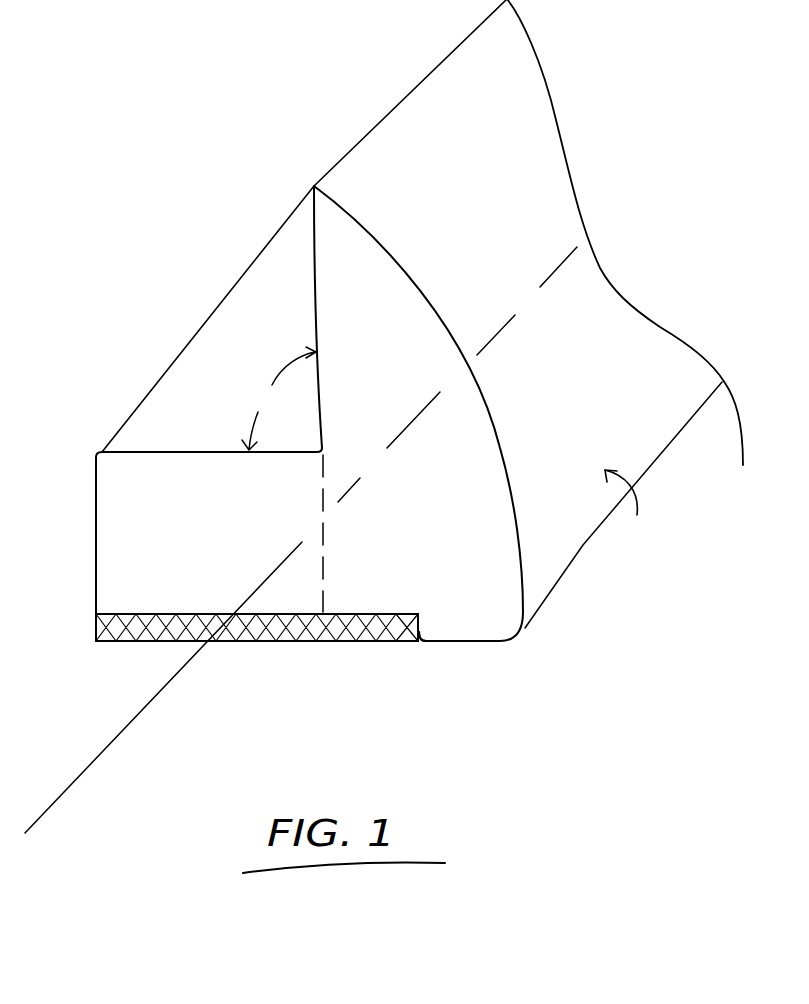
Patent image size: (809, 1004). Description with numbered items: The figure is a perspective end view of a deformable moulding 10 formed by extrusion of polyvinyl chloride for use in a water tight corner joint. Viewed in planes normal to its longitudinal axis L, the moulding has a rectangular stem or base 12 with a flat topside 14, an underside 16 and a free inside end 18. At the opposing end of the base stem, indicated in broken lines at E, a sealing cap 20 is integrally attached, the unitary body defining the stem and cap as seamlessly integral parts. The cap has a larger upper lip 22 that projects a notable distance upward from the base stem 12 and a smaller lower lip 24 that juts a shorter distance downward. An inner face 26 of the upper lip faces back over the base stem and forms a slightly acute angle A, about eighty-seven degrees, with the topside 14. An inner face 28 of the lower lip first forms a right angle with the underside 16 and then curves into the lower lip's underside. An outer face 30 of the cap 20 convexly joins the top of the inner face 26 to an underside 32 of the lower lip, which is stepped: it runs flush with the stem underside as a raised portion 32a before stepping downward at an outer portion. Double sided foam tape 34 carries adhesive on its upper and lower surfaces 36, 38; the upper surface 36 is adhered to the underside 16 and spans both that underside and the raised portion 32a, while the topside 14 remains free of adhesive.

The moulding 10 is at (208, 116).
The rectangular stem or base 12 is at (140, 541).
The topside 14 is at (178, 415).
The underside 16 is at (140, 641).
The free inside end 18 is at (95, 503).
The sealing cap 20 is at (637, 511).
The upper lip 22 is at (397, 161).
The lower lip 24 is at (567, 543).
The inner face of the upper lip 26 is at (288, 252).
The inner face of the lower lip 28 is at (415, 633).
The outer face of the cap 30 is at (587, 352).
The underside of the lower lip 32 is at (436, 657).
The raised portion of the lower lip's underside 32a is at (400, 620).
The double sided foam tape 34 is at (273, 632).
The upper surface of the tape 36 is at (172, 614).
The lower surface of the tape 38 is at (107, 645).
The angle A is at (279, 398).
The opposing end of the base stem E is at (325, 572).
The longitudinal axis L is at (163, 695).